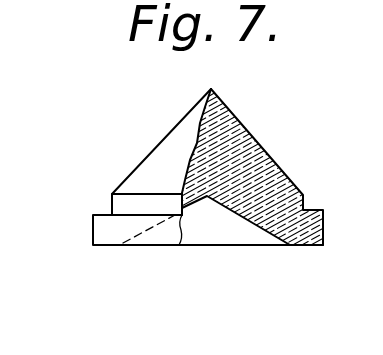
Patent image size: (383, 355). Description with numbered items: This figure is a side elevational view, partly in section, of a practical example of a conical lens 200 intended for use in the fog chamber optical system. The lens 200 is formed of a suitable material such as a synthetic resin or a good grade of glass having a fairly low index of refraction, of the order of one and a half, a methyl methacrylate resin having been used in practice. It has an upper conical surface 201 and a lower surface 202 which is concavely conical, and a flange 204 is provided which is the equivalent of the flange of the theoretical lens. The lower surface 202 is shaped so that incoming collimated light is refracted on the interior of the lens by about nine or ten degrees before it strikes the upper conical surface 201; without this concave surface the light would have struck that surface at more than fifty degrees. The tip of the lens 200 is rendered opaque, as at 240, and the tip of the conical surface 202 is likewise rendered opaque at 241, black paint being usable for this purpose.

The lens 200 is at (255, 137).
The opaque tip of the lens 240 is at (211, 89).
The upper conical surface 201 is at (172, 130).
The flange 204 is at (103, 231).
The opaque tip of the conical surface 241 is at (213, 198).
The lower surface 202 is at (272, 245).